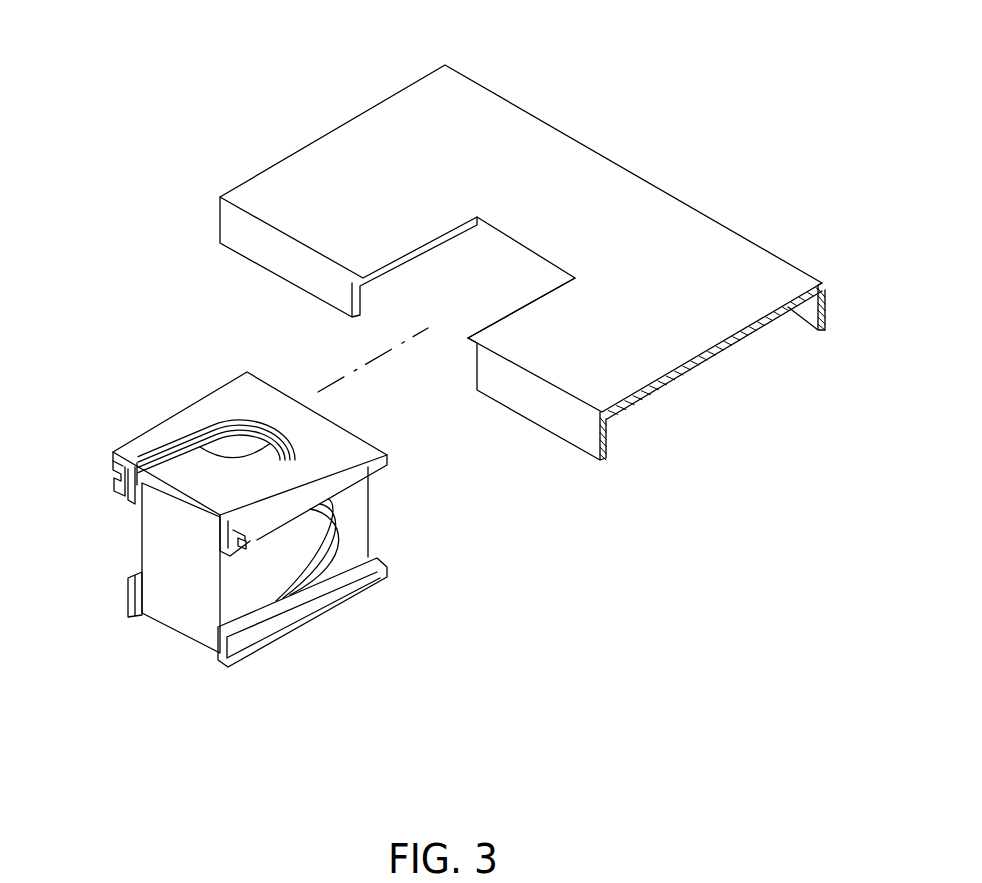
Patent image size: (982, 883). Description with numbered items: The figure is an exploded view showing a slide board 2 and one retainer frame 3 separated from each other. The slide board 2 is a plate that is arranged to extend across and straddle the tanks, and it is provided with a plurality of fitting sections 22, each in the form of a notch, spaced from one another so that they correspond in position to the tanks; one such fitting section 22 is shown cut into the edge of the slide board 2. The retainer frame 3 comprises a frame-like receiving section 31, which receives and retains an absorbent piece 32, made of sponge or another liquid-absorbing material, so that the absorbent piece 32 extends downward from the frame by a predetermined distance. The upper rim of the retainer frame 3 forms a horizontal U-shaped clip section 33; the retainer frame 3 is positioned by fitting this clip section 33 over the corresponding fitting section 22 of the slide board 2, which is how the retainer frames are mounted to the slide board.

The slide board 2 is at (550, 122).
The fitting section 22 is at (508, 243).
The retainer frame 3 is at (223, 382).
The receiving section 31 is at (227, 462).
The absorbent piece 32 is at (147, 540).
The clip section 33 is at (126, 468).